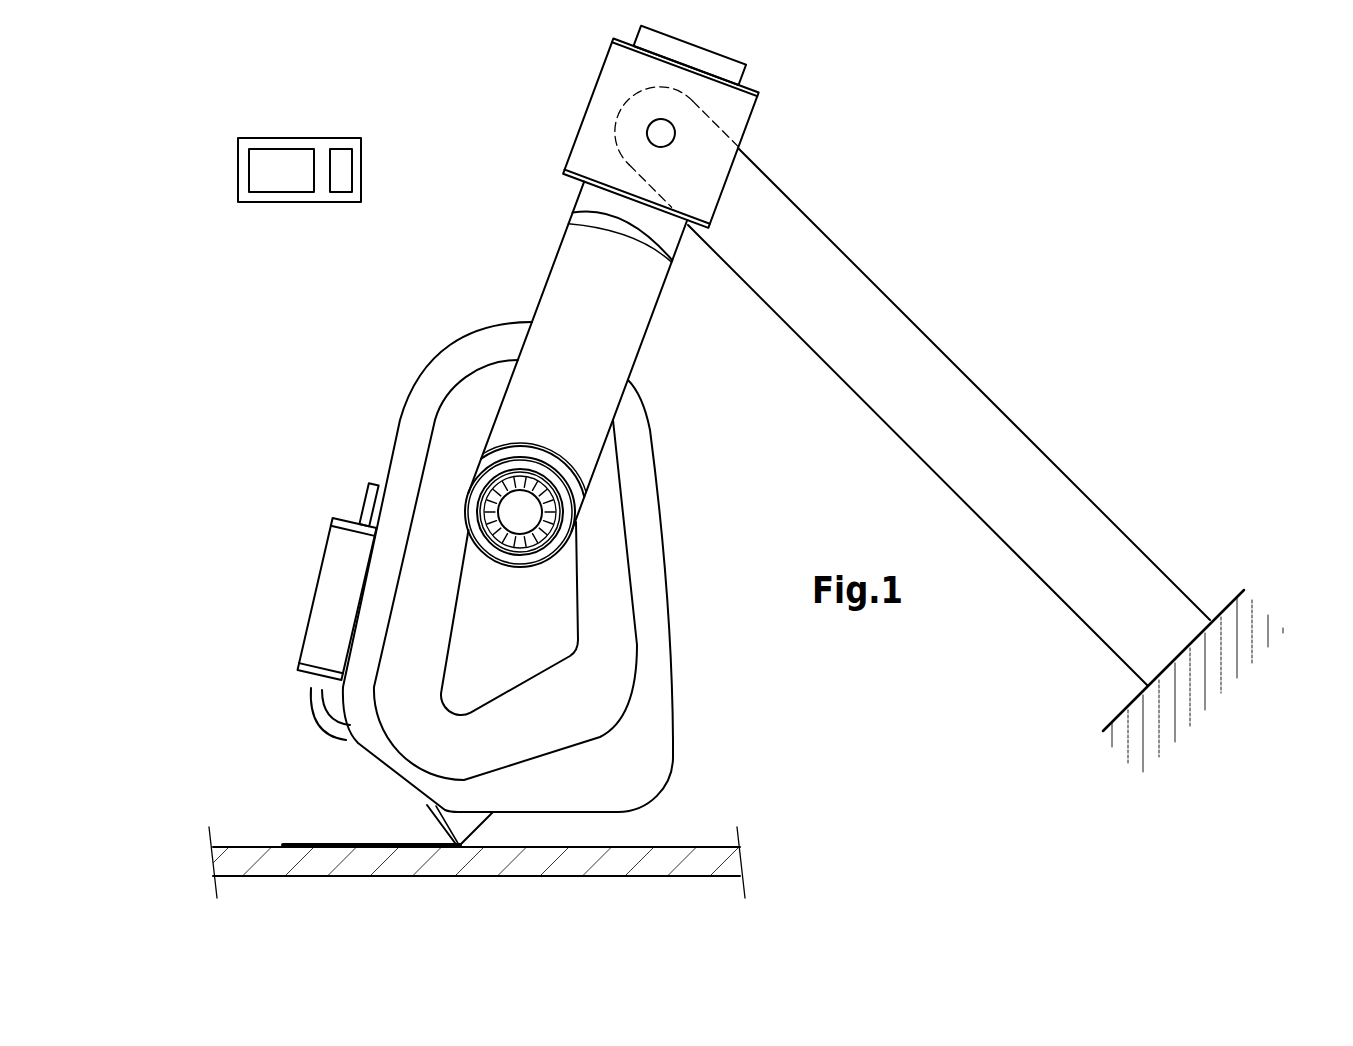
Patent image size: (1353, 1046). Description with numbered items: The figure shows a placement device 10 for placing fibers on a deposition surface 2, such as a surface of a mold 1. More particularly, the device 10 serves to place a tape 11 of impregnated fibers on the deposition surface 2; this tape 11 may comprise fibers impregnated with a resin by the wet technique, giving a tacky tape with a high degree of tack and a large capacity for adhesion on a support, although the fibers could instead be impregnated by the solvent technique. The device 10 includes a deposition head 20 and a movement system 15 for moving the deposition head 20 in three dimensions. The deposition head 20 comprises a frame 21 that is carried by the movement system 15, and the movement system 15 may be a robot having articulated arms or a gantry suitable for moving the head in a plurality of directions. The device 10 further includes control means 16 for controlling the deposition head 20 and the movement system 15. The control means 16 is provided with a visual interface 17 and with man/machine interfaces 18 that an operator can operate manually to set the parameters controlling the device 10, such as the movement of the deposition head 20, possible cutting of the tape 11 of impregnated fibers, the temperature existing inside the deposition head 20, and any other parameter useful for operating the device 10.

The mold 1 is at (740, 860).
The deposition surface 2 is at (701, 838).
The placement device 10 is at (1004, 362).
The tape of impregnated fibers 11 is at (308, 847).
The movement system 15 is at (684, 315).
The control means 16 is at (214, 160).
The visual interface 17 is at (293, 165).
The man/machine interfaces 18 is at (342, 167).
The deposition head 20 is at (368, 389).
The frame 21 is at (650, 555).